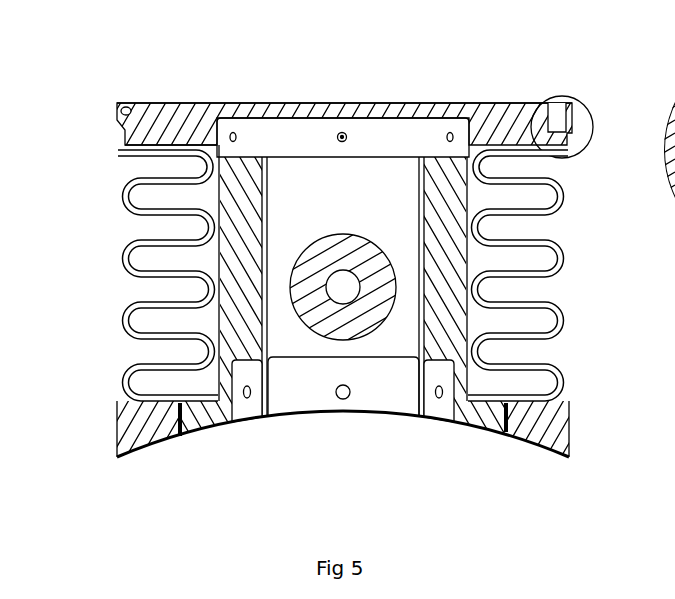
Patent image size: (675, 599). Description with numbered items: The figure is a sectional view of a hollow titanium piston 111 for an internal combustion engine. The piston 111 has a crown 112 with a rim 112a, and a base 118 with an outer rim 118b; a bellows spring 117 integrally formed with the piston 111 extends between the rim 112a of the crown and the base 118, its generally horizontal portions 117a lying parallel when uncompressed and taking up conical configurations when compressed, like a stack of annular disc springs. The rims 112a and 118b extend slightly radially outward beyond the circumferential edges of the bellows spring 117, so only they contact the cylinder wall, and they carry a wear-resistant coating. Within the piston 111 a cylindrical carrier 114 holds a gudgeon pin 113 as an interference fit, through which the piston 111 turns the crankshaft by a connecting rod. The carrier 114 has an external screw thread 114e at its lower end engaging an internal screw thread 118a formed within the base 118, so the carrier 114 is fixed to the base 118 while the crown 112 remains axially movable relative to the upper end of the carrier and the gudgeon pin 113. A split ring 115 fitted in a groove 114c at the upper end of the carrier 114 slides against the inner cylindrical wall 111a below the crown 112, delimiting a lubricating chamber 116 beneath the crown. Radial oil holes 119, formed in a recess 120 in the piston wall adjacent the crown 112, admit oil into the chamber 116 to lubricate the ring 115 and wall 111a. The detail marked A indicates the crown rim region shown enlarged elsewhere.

The piston 111 is at (88, 111).
The inner cylindrical wall 111a is at (470, 118).
The crown 112 is at (197, 130).
The rim 112a is at (118, 119).
The gudgeon pin 113 is at (344, 322).
The cylindrical carrier 114 is at (236, 288).
The groove 114c is at (417, 187).
The external screw thread 114e is at (193, 431).
The split ring 115 is at (217, 205).
The lubricating chamber 116 is at (300, 128).
The bellows spring 117 is at (107, 345).
The generally horizontal portions 117a is at (520, 183).
The base 118 is at (140, 427).
The internal screw thread 118a is at (548, 448).
The outer rim 118b is at (115, 421).
The radial oil holes 119 is at (342, 130).
The recess 120 is at (117, 143).
The detail A is at (563, 95).